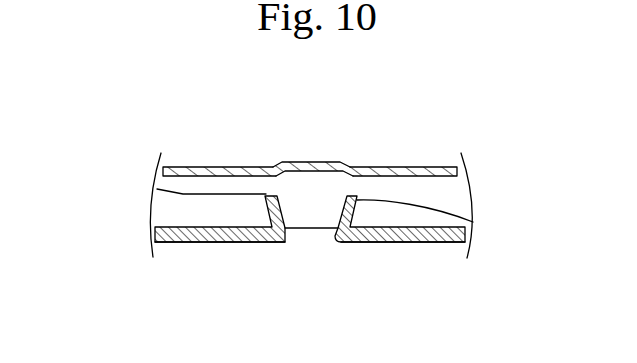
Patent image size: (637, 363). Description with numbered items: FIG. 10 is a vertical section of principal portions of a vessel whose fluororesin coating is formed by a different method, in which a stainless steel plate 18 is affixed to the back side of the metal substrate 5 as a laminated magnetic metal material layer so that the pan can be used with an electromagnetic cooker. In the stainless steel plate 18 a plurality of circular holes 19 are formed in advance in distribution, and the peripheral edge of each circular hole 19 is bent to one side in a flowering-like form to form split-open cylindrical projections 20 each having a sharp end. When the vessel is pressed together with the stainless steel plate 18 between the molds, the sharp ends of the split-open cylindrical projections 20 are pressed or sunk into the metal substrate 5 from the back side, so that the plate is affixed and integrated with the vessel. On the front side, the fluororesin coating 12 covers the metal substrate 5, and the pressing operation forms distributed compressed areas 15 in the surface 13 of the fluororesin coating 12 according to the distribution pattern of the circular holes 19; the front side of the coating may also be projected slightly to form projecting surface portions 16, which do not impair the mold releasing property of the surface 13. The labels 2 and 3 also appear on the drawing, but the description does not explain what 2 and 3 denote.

The upper casing part 2 is at (227, 128).
The lower casing part 3 is at (300, 250).
The metal substrate 5 is at (178, 208).
The fluororesin coating 12 is at (437, 170).
The surface of the fluororesin coating 13 is at (184, 167).
The compressed area 15 is at (308, 162).
The projecting surface portion 16 is at (365, 155).
The stainless steel plate 18 is at (187, 243).
The circular hole 19 is at (308, 228).
The split-open cylindrical projection 20 is at (181, 194).